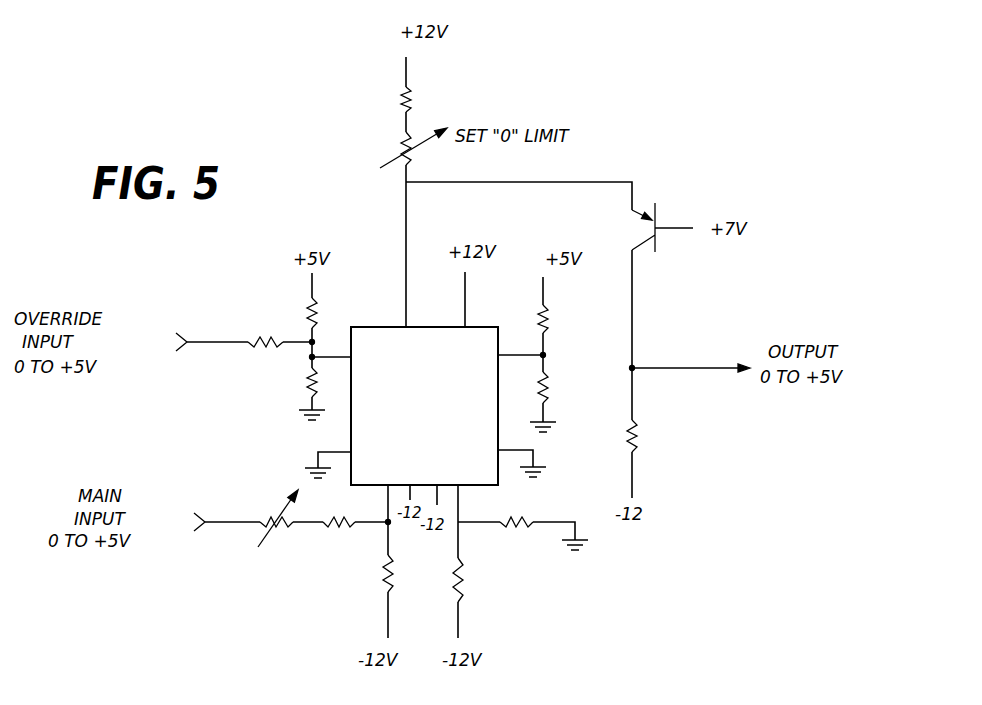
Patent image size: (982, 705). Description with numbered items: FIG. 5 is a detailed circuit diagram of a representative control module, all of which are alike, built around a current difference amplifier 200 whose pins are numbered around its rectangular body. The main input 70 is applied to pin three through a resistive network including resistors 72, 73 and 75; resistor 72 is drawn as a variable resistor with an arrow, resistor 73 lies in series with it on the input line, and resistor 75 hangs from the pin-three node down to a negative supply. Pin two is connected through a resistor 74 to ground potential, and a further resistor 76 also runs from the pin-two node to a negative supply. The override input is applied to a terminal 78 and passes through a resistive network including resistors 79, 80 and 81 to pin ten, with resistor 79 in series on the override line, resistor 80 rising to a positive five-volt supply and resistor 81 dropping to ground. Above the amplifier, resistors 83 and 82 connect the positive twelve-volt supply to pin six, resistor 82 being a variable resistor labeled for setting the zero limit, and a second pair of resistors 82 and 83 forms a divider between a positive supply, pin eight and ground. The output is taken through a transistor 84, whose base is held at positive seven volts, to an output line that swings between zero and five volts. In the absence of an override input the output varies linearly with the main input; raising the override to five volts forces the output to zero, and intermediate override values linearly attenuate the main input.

The main input 70 is at (206, 521).
The resistor 72 is at (291, 528).
The resistor 73 is at (349, 530).
The resistor 74 is at (517, 518).
The resistor 75 is at (384, 577).
The resistor 76 is at (456, 590).
The terminal 78 is at (208, 318).
The resistor 79 is at (264, 350).
The resistor 80 is at (307, 305).
The resistor 81 is at (306, 375).
The resistor / set zero limit potentiometer 82 is at (401, 143).
The resistor 83 is at (401, 95).
The transistor 84 is at (648, 230).
The current difference amplifier 200 is at (398, 300).